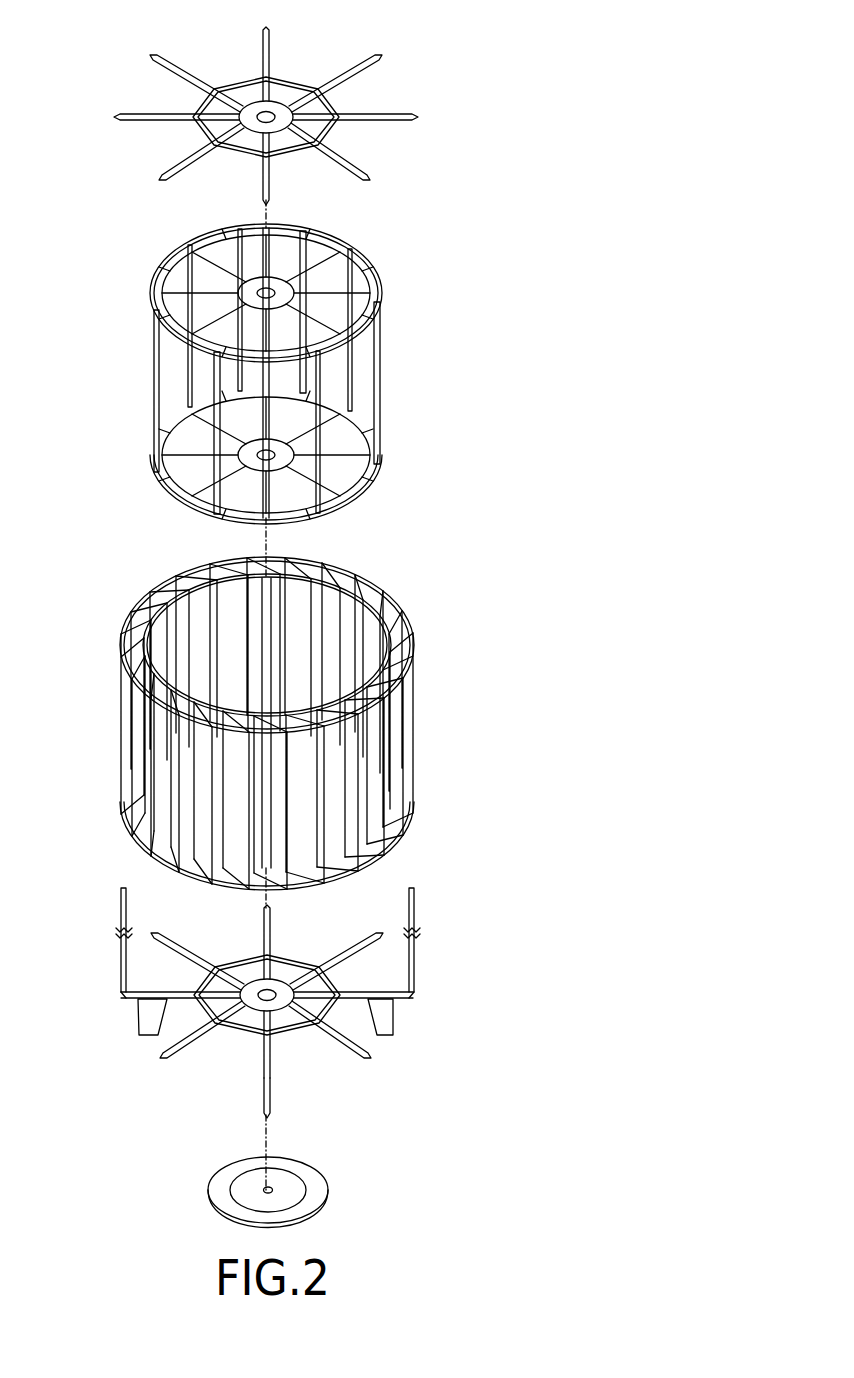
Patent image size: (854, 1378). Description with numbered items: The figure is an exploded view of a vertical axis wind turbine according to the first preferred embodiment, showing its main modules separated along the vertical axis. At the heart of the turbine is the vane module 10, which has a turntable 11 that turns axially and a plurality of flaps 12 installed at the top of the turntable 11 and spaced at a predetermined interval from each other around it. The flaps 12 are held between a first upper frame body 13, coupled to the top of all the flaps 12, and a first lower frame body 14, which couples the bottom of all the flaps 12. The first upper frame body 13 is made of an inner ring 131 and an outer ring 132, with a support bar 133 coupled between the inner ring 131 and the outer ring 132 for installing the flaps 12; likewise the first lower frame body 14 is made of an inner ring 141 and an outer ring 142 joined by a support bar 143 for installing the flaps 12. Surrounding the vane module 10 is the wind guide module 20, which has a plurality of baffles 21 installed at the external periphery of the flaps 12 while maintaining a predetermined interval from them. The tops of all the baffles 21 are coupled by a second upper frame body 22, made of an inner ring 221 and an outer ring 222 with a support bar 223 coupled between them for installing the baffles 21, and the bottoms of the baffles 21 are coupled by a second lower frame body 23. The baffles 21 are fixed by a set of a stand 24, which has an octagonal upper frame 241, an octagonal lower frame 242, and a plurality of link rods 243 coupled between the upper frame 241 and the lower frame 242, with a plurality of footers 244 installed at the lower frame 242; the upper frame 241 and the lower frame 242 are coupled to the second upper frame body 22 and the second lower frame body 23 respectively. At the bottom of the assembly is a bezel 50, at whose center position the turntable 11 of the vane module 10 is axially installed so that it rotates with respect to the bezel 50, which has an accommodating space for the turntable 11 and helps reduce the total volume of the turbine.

The vane module 10 is at (137, 255).
The turntable 11 is at (283, 1182).
The flaps 12 is at (365, 388).
The first upper frame body 13 is at (447, 246).
The inner ring 131 is at (318, 230).
The outer ring 132 is at (380, 285).
The support bar 133 is at (343, 243).
The first lower frame body 14 is at (440, 486).
The inner ring 141 is at (330, 522).
The outer ring 142 is at (383, 463).
The support bar 143 is at (355, 492).
The wind guide module 20 is at (112, 608).
The baffles 21 is at (405, 723).
The second upper frame body 22 is at (445, 622).
The inner ring 221 is at (367, 583).
The outer ring 222 is at (412, 663).
The support bar 223 is at (398, 610).
The second lower frame body 23 is at (437, 811).
The stand 24 is at (446, 113).
The upper frame 241 is at (162, 112).
The lower frame 242 is at (290, 1040).
The link rods 243 is at (120, 898).
The footers 244 is at (143, 1017).
The bezel 50 is at (318, 1192).